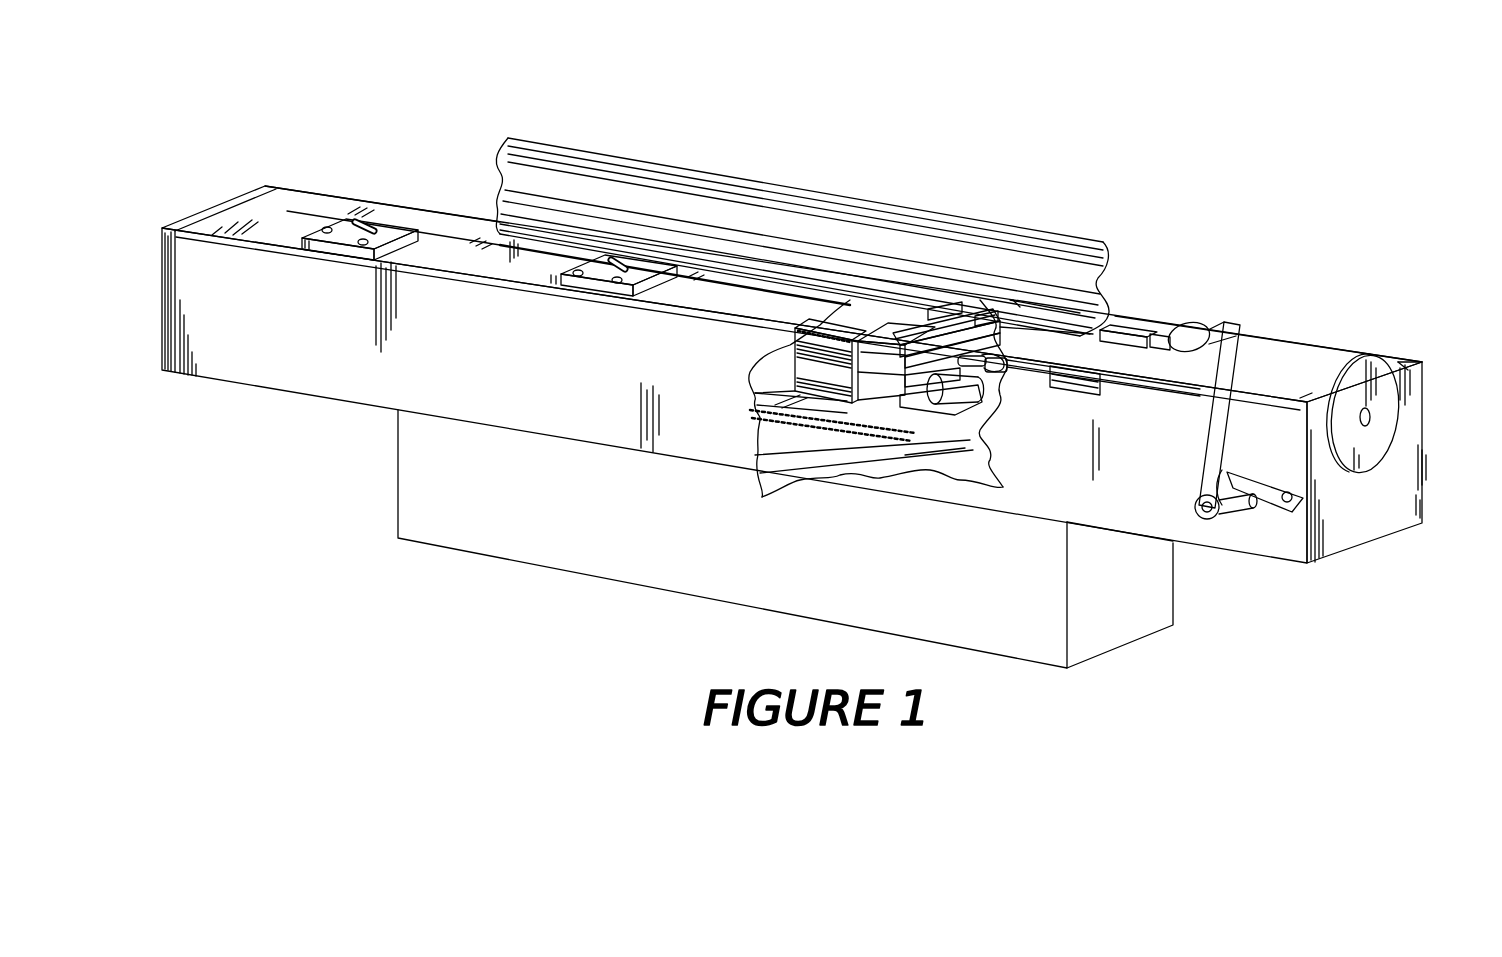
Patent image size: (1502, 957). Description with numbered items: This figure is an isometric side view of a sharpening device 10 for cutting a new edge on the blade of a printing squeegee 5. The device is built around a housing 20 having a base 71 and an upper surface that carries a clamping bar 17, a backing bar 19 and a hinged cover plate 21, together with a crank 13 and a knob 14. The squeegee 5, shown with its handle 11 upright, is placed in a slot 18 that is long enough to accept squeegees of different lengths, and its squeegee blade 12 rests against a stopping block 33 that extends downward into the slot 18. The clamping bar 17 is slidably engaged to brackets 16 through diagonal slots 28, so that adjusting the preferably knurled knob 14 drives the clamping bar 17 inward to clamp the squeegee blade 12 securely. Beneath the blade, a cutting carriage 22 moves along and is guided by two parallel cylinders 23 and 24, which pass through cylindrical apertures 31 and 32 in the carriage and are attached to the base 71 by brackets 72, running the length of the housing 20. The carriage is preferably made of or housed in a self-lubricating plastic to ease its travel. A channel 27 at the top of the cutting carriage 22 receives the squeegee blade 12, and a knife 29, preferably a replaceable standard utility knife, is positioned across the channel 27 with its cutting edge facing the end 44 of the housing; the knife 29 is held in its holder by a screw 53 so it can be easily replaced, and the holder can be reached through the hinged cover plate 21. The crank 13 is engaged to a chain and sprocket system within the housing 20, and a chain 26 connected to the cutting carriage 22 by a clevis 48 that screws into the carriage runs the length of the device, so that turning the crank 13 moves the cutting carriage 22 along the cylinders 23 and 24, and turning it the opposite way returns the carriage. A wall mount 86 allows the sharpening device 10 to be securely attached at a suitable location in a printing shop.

The squeegee 5 is at (656, 152).
The sharpening device 10 is at (288, 425).
The handle 11 is at (740, 205).
The squeegee blade 12 is at (1073, 338).
The crank 13 is at (1242, 330).
The knob 14 is at (1383, 427).
The brackets 16 is at (335, 248).
The clamping bar 17 is at (465, 267).
The slot 18 is at (475, 247).
The backing bar 19 is at (453, 223).
The housing 20 is at (1093, 480).
The hinged cover plate 21 is at (290, 205).
The cutting carriage 22 is at (830, 425).
The cylinder 23 is at (975, 450).
The cylinder 24 is at (990, 373).
The chain 26 is at (770, 420).
The channel 27 is at (935, 340).
The diagonal slots 28 is at (358, 222).
The knife 29 is at (895, 340).
The cylindrical aperture 31 is at (850, 420).
The cylindrical aperture 32 is at (893, 425).
The stopping block 33 is at (1097, 380).
The end 44 is at (1368, 497).
The clevis 48 is at (985, 357).
The screw 53 is at (887, 330).
The base 71 is at (780, 427).
The brackets 72 is at (925, 478).
The wall mount 86 is at (583, 497).